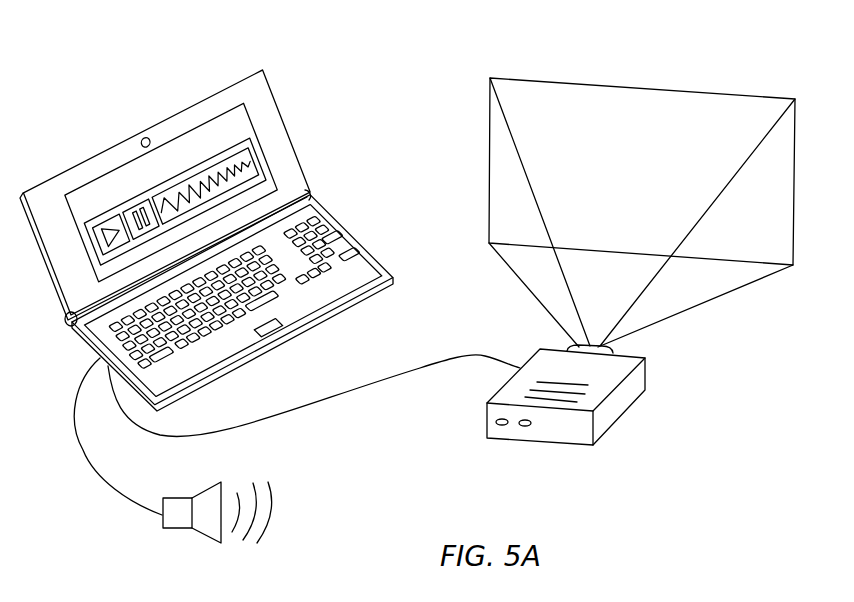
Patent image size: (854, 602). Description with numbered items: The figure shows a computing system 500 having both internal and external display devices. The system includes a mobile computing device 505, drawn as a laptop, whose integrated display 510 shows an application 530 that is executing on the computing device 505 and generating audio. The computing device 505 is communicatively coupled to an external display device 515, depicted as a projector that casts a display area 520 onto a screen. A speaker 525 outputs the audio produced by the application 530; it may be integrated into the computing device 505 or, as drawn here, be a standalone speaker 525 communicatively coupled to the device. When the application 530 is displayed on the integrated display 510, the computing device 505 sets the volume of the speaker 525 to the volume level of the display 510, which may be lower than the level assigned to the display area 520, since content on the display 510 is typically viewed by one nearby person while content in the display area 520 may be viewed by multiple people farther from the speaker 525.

The computing system 500 is at (150, 82).
The mobile computing device 505 is at (272, 90).
The integrated display 510 is at (261, 146).
The external display device 515 is at (628, 410).
The display area 520 is at (635, 88).
The speaker 525 is at (203, 541).
The application 530 is at (120, 203).